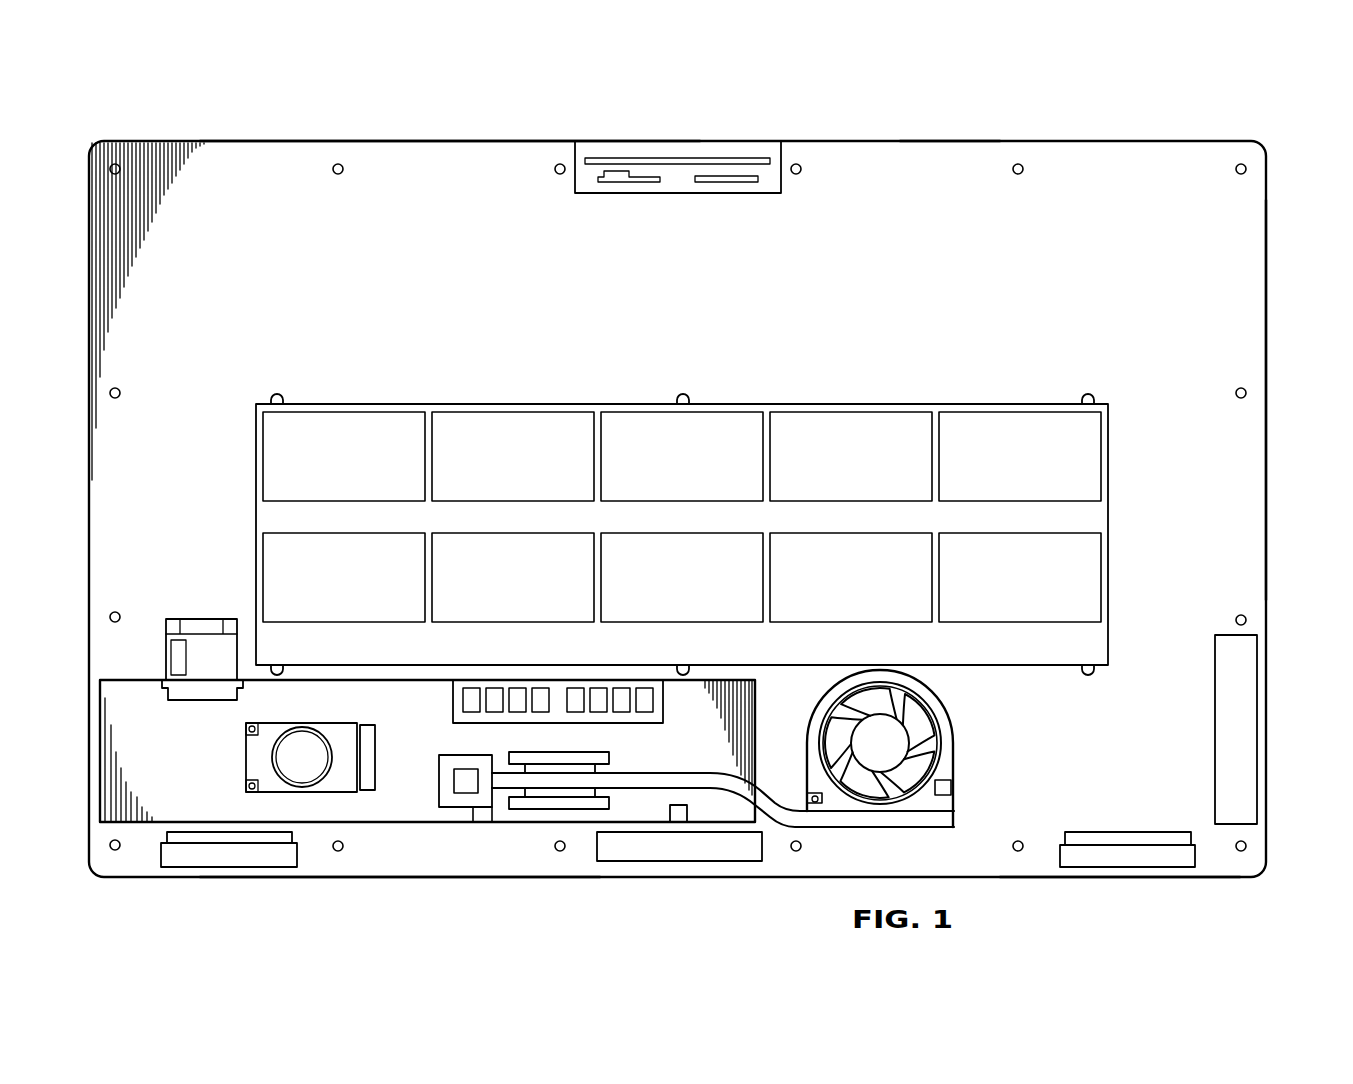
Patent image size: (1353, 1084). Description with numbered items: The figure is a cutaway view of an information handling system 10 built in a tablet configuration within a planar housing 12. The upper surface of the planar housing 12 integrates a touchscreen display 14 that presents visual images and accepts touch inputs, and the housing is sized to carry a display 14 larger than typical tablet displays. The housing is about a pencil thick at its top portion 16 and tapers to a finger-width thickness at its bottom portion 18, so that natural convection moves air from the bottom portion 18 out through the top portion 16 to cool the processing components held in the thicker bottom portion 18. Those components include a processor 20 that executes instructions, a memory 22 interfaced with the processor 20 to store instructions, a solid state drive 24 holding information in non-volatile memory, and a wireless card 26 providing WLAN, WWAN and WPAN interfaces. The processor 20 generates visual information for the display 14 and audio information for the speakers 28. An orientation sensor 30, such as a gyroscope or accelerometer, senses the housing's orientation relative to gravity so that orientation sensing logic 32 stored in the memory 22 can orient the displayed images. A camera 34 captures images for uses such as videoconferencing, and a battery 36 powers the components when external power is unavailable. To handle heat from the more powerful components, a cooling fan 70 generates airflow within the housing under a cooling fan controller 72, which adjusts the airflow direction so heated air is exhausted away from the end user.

The information handling system 10 is at (1078, 120).
The planar housing 12 is at (432, 140).
The touchscreen display 14 is at (944, 167).
The top portion 16 is at (1267, 170).
The bottom portion 18 is at (1267, 846).
The processor 20 is at (439, 787).
The memory 22 is at (453, 700).
The solid state drive 24 is at (245, 757).
The wireless card 26 is at (166, 645).
The speakers 28 is at (228, 832).
The orientation sensor 30 is at (483, 814).
The orientation sensing logic 32 is at (433, 891).
The camera 34 is at (678, 194).
The battery 36 is at (850, 404).
The cooling fan 70 is at (938, 732).
The cooling fan controller 72 is at (951, 790).